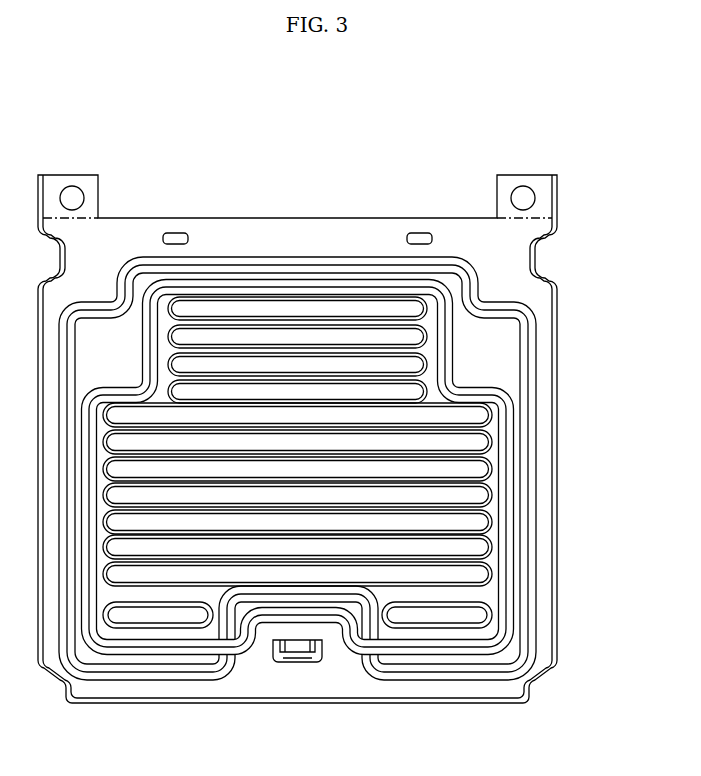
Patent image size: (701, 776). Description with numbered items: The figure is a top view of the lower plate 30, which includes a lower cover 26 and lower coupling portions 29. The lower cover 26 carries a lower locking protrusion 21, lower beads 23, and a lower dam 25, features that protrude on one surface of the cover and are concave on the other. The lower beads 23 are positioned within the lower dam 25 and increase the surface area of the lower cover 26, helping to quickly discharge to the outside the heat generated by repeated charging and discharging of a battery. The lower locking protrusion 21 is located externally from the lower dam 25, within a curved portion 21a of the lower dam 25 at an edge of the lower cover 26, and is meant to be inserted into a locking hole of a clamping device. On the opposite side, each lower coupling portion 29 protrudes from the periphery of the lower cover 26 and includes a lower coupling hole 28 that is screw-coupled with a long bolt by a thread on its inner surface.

The lower plate 30 is at (156, 105).
The lower coupling portion 29 is at (535, 180).
The lower coupling hole 28 is at (513, 186).
The lower cover 26 is at (543, 300).
The lower dam 25 is at (498, 352).
The lower beads 23 is at (437, 617).
The lower locking protrusion 21 is at (297, 653).
The curved portion 21a is at (342, 640).